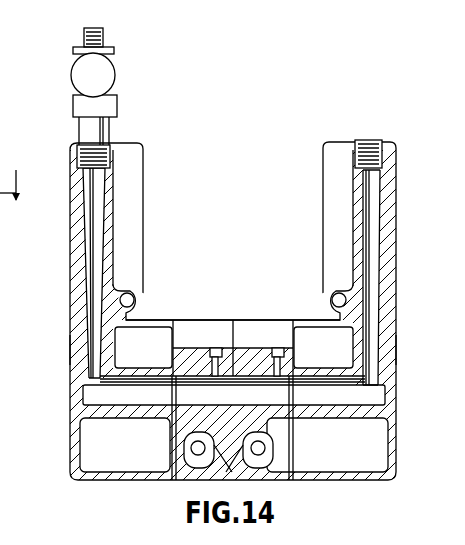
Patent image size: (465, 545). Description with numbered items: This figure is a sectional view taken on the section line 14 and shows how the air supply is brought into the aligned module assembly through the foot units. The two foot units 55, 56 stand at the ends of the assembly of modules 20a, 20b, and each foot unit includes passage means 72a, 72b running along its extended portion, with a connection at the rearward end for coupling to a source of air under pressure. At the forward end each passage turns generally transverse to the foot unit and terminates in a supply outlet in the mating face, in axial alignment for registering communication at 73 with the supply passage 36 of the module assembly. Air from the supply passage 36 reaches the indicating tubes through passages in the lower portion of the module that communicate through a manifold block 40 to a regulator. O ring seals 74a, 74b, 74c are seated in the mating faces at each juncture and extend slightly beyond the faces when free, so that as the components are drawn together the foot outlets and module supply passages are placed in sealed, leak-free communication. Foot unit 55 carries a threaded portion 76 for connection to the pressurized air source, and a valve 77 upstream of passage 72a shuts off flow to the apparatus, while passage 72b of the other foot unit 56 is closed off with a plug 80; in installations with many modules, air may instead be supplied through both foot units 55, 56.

The section line 14 is at (15, 204).
The module 20a is at (185, 484).
The module 20b is at (289, 484).
The supply passage 36 is at (249, 398).
The manifold block 40 is at (210, 298).
The foot unit 55 is at (72, 349).
The foot unit 56 is at (398, 348).
The passage means 72a is at (83, 278).
The passage means 72b is at (383, 265).
The registering communication 73 is at (164, 397).
The O ring seal 74a is at (170, 373).
The O ring seal 74b is at (232, 368).
The O ring seal 74c is at (290, 372).
The threaded portion 76 is at (77, 161).
The valve 77 is at (112, 75).
The plug 80 is at (368, 140).